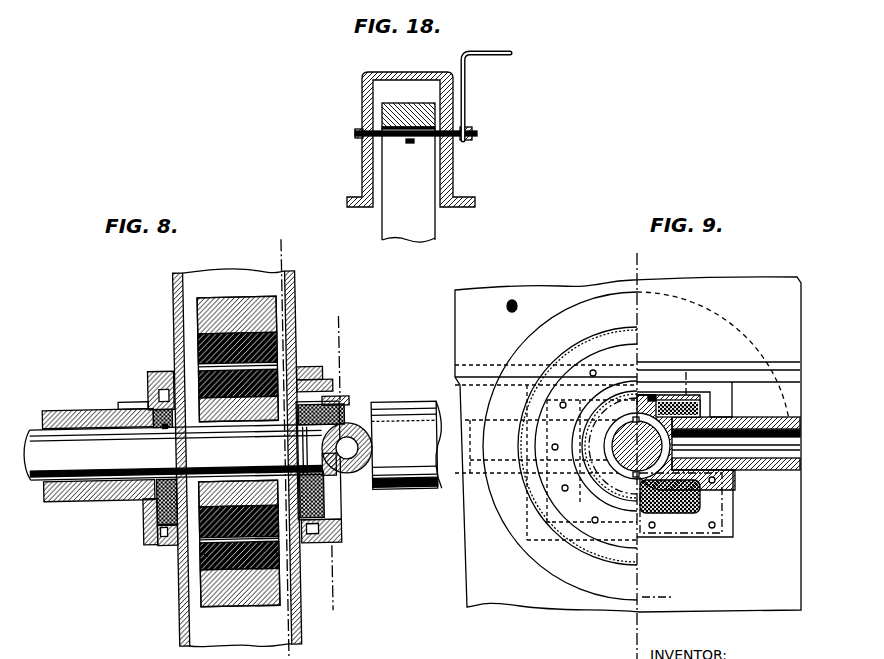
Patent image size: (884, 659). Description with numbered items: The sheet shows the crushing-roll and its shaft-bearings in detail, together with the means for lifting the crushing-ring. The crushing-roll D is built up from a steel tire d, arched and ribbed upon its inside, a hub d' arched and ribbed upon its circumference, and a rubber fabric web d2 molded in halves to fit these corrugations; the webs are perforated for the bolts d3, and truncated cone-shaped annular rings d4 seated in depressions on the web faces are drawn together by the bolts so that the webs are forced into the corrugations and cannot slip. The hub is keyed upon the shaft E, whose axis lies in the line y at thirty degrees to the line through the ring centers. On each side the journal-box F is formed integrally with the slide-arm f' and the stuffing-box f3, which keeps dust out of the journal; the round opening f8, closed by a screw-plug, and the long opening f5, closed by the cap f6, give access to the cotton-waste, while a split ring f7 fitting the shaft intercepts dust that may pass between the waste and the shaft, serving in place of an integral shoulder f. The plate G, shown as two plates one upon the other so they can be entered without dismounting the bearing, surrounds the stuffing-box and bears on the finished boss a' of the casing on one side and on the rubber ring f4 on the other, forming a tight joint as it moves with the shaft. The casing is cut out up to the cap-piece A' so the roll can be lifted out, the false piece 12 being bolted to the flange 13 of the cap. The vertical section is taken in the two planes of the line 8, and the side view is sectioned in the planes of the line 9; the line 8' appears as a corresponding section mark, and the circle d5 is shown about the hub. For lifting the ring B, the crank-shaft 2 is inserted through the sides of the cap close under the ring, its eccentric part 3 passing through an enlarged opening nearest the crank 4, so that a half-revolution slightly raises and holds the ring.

In FIG. 18, the cap-piece A' is at (411, 129).
In FIG. 18, the crushing-ring B is at (408, 109).
In FIG. 18, the crank-shaft 2 is at (432, 136).
In FIG. 18, the eccentric part 3 is at (408, 143).
In FIG. 18, the crank 4 is at (486, 96).
In FIG. 8, the steel tire d is at (238, 451).
In FIG. 9, the steel tire d is at (586, 437).
In FIG. 8, the hub d' is at (238, 451).
In FIG. 9, the hub d' is at (609, 446).
In FIG. 8, the rubber fabric web d2 is at (200, 346).
In FIG. 9, the rubber fabric web d2 is at (597, 545).
In FIG. 8, the bolts d3 is at (278, 556).
In FIG. 8, the annular rings d4 is at (200, 552).
In FIG. 9, the annular rings d4 is at (604, 447).
In FIG. 9, the pitch circle d5 is at (593, 446).
In FIG. 8, the crushing-roll D is at (178, 590).
In FIG. 9, the crushing-roll D is at (636, 446).
In FIG. 8, the shaft E is at (232, 448).
In FIG. 8, the journal-box F is at (98, 446).
In FIG. 8, the plate G is at (155, 384).
In FIG. 9, the shoulder f is at (718, 442).
In FIG. 8, the slide-arm f' is at (347, 448).
In FIG. 8, the stuffing-box f3 is at (142, 508).
In FIG. 9, the stuffing-box f3 is at (670, 496).
In FIG. 8, the rubber ring f4 is at (160, 393).
In FIG. 8, the long opening f5 is at (336, 508).
In FIG. 8, the cap f6 is at (340, 531).
In FIG. 8, the split ring f7 is at (232, 442).
In FIG. 8, the round opening f8 is at (344, 402).
In FIG. 9, the round opening f8 is at (690, 394).
In FIG. 8, the false piece 12 is at (314, 391).
In FIG. 9, the false piece 12 is at (650, 384).
In FIG. 8, the flange 13 is at (303, 376).
In FIG. 9, the flange 13 is at (645, 380).
In FIG. 9, the axis line 8' is at (676, 477).
In FIG. 9, the boss a' is at (685, 471).
In FIG. 8, the section line 9 is at (311, 439).
In FIG. 8, the line y is at (330, 587).
In FIG. 9, the section line 8 is at (638, 447).